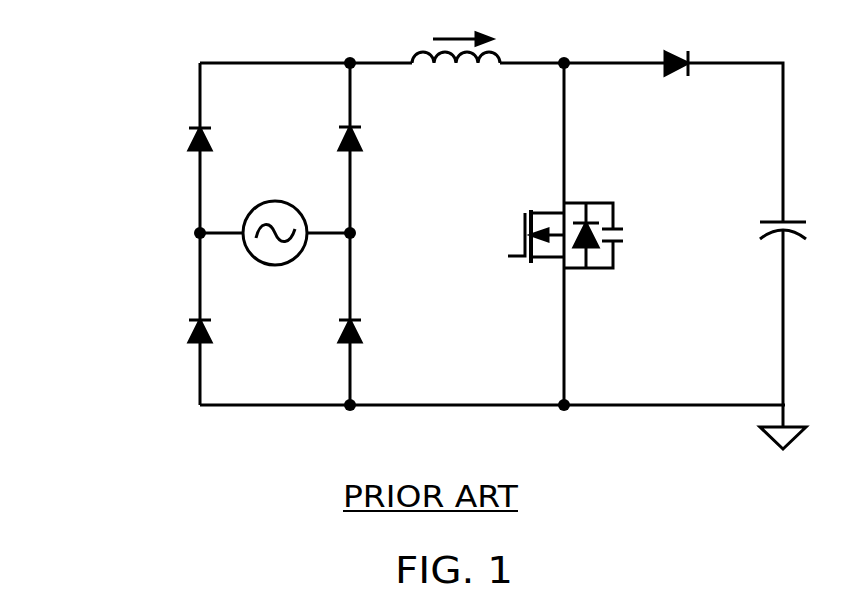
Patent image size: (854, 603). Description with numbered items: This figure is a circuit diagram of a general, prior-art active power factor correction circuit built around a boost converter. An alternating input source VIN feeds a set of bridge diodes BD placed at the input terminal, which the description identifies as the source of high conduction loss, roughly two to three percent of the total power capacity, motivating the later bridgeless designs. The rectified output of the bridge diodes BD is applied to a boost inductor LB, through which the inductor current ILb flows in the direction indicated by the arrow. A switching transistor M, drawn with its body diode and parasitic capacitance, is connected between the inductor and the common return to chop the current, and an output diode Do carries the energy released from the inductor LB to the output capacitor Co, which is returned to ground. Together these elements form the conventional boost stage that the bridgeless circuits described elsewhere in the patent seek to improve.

The bridge diodes BD is at (342, 325).
The AC input voltage source VIN is at (275, 251).
The boost inductor LB is at (456, 76).
The inductor current ILb is at (462, 28).
The switching transistor (MOSFET) M is at (552, 235).
The output diode Do is at (676, 49).
The output capacitor Co is at (766, 335).